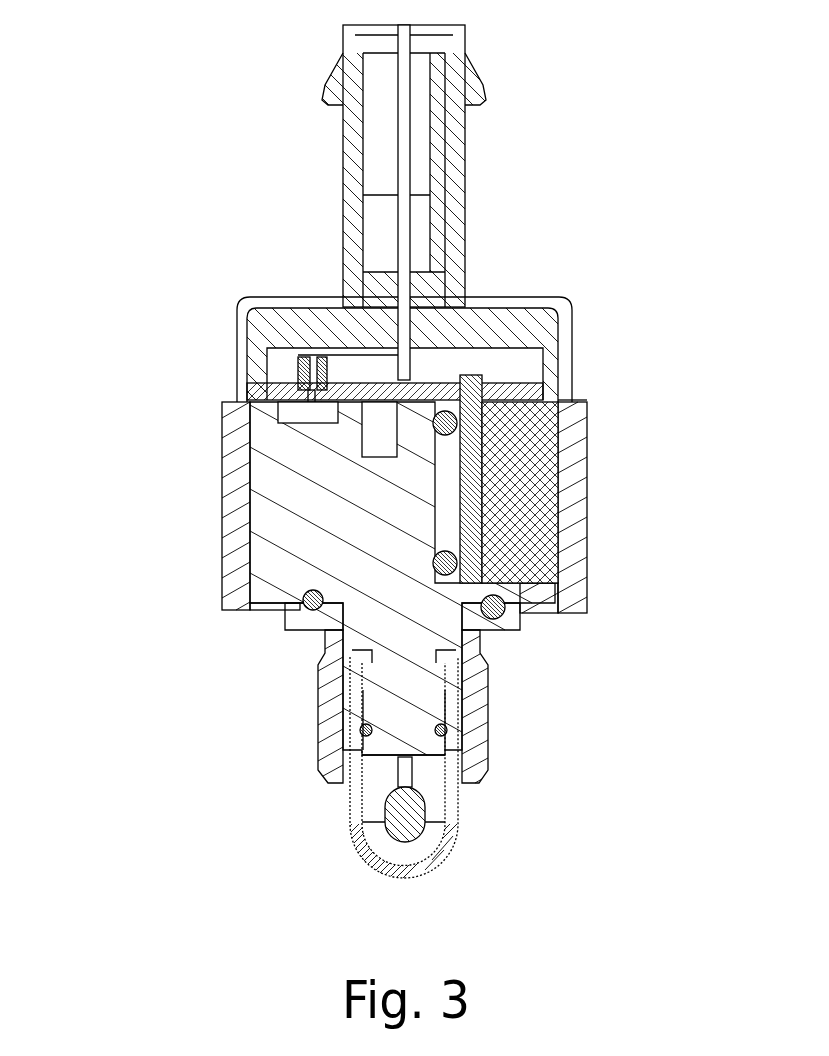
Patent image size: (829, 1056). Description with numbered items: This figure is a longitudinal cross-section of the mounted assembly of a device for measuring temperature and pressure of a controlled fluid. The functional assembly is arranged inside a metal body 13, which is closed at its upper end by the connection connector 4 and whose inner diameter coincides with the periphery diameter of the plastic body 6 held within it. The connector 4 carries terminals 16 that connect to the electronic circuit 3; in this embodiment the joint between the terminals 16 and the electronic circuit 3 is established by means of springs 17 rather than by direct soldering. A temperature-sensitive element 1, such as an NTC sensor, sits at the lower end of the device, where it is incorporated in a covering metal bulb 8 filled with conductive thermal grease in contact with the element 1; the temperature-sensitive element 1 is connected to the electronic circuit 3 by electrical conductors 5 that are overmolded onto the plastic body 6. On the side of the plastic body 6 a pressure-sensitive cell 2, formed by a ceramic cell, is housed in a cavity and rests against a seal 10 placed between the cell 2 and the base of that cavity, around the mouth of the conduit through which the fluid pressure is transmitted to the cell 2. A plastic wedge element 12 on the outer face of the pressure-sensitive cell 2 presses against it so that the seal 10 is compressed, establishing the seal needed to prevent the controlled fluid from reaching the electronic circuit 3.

The temperature-sensitive element 1 is at (400, 815).
The pressure-sensitive cell 2 is at (472, 440).
The electronic circuit 3 is at (282, 392).
The connection connector 4 is at (355, 127).
The electrical conductors 5 is at (402, 772).
The plastic body 6 is at (295, 489).
The covering metal bulb 8 is at (435, 858).
The seal 10 is at (445, 562).
The plastic wedge element 12 is at (520, 497).
The metal body 13 is at (232, 598).
The terminals 16 is at (405, 110).
The springs 17 is at (302, 362).